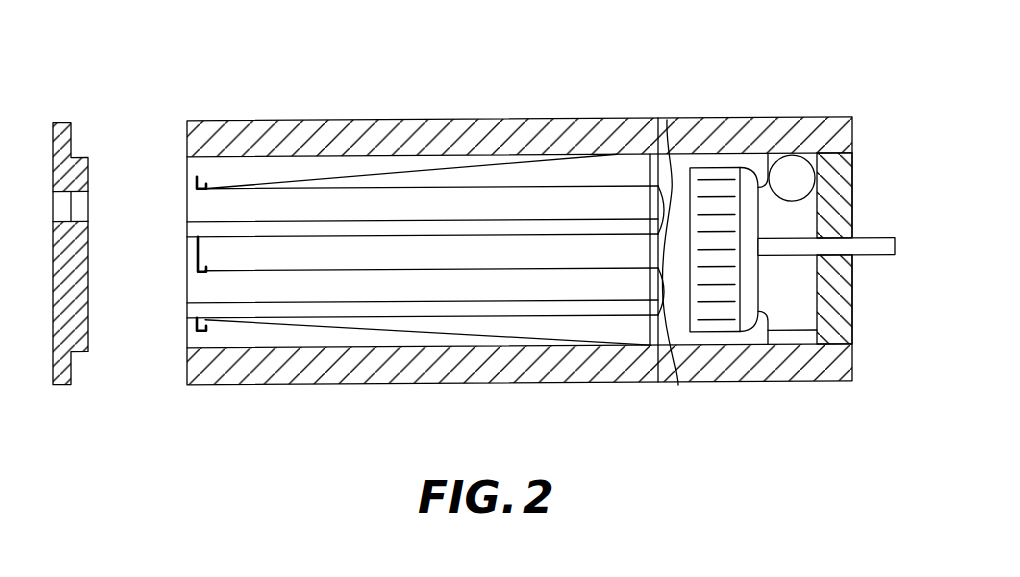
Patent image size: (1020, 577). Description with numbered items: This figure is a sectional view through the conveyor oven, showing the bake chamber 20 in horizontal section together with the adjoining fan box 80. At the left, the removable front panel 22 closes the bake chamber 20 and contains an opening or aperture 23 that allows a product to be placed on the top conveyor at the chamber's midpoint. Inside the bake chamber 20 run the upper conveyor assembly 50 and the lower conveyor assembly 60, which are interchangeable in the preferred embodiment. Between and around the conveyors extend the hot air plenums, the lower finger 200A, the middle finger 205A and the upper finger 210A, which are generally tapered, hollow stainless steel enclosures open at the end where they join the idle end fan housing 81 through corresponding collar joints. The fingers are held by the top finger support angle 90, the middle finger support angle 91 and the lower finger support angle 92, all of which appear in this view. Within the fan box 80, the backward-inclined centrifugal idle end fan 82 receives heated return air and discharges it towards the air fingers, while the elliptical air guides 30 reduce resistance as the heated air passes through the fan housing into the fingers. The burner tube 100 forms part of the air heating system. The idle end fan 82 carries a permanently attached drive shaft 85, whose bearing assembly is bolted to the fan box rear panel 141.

The bake chamber 20 is at (430, 115).
The front panel 22 is at (59, 385).
The opening or aperture 23 is at (80, 203).
The elliptical air guides 30 is at (667, 120).
The upper conveyor assembly 50 is at (187, 227).
The lower conveyor assembly 60 is at (187, 310).
The fan box 80 is at (753, 113).
The idle end fan housing 81 is at (770, 330).
The backward-inclined centrifugal idle end fan 82 is at (730, 277).
The drive shaft 85 is at (878, 238).
The top finger support angle 90 is at (191, 186).
The middle finger support angle 91 is at (191, 265).
The lower finger support angle 92 is at (191, 324).
The burner tube 100 is at (806, 189).
The fan box rear panel 141 is at (853, 305).
The lower finger 200A is at (588, 327).
The middle finger 205A is at (430, 262).
The upper finger 210A is at (620, 172).